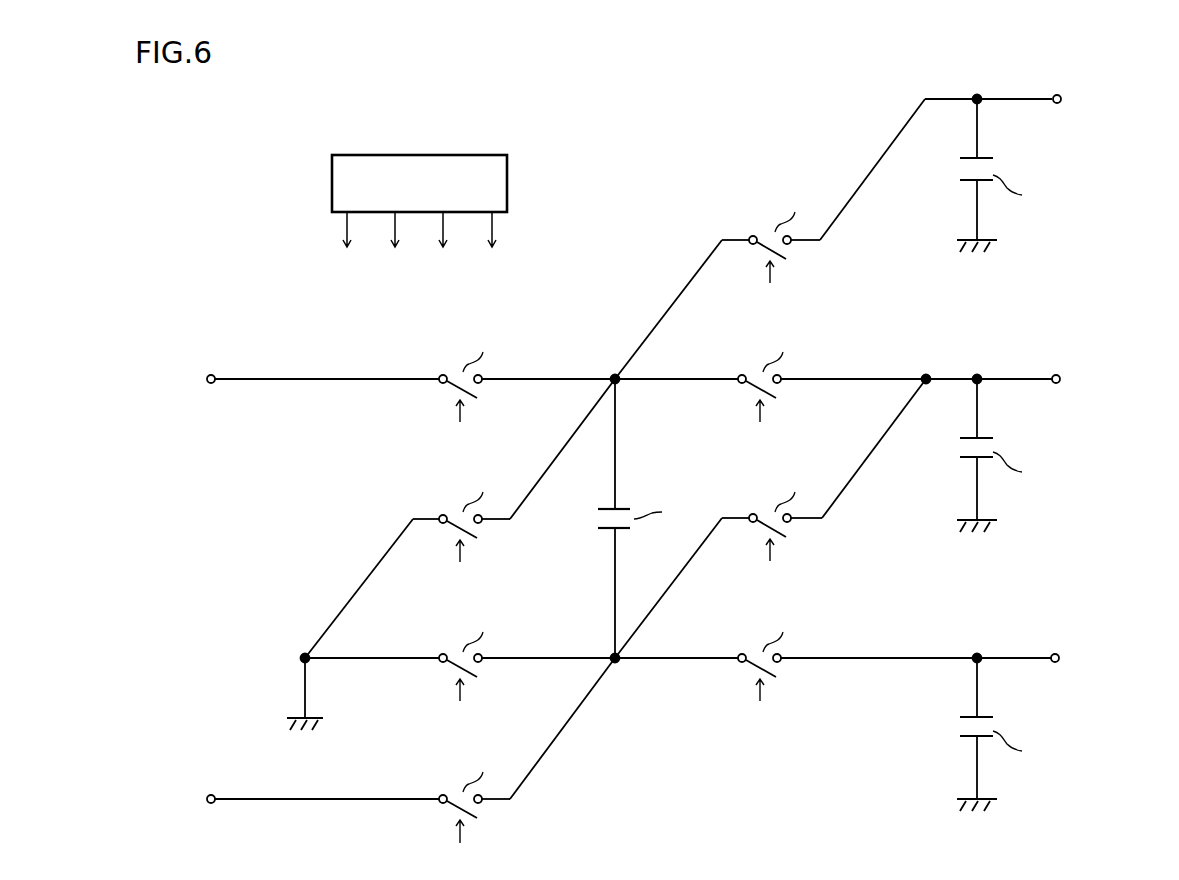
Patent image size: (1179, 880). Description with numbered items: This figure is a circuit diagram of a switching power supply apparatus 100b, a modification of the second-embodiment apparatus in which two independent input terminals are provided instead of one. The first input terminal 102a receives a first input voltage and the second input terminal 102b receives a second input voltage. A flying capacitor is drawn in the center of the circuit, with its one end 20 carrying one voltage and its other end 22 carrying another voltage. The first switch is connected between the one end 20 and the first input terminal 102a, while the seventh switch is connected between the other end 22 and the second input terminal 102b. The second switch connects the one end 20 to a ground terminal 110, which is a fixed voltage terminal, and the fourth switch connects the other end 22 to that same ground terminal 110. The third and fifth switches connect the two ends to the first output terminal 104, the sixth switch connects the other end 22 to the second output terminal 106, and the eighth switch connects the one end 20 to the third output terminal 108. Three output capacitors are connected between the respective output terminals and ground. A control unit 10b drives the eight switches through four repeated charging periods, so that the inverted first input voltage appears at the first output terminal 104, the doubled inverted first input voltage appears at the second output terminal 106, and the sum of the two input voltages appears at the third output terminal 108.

The switching power supply apparatus 100b is at (737, 870).
The control unit 10b is at (507, 182).
The first input terminal 102a is at (214, 375).
The second input terminal 102b is at (214, 795).
The first output terminal 104 is at (1059, 375).
The second output terminal 106 is at (1058, 654).
The third output terminal 108 is at (1060, 95).
The ground terminal 110 is at (326, 722).
The one end of the flying capacitor 20 is at (610, 485).
The other end of the flying capacitor 22 is at (610, 550).